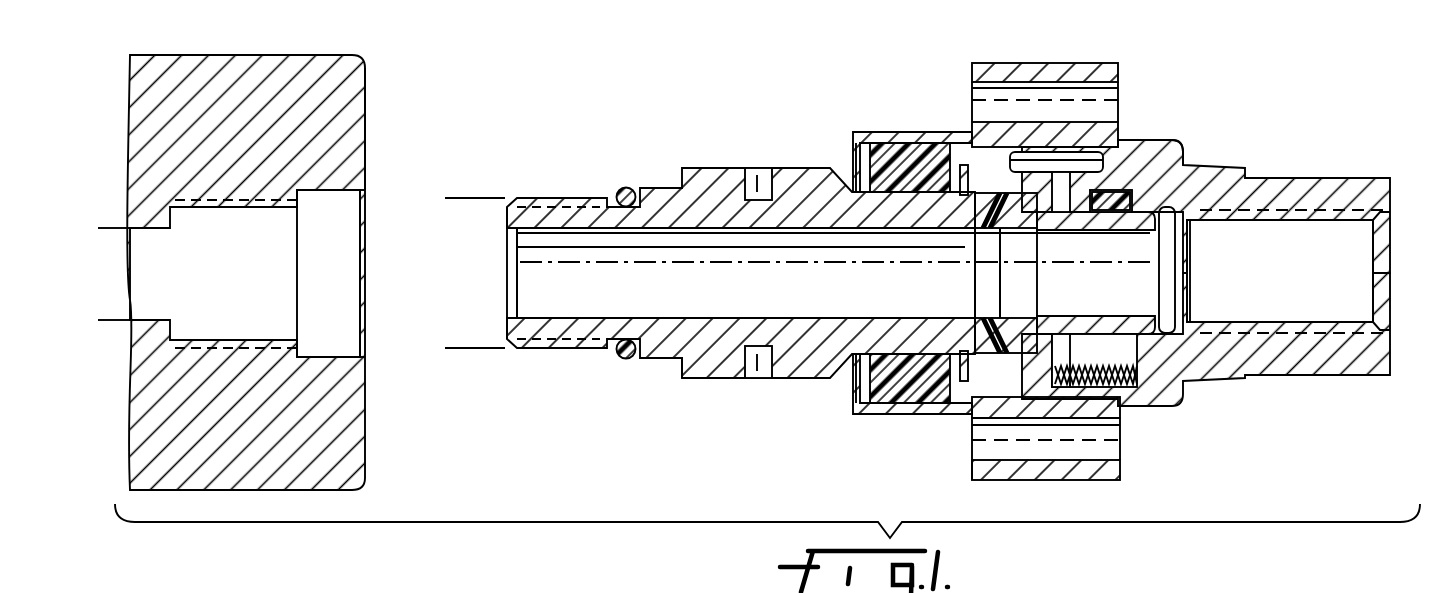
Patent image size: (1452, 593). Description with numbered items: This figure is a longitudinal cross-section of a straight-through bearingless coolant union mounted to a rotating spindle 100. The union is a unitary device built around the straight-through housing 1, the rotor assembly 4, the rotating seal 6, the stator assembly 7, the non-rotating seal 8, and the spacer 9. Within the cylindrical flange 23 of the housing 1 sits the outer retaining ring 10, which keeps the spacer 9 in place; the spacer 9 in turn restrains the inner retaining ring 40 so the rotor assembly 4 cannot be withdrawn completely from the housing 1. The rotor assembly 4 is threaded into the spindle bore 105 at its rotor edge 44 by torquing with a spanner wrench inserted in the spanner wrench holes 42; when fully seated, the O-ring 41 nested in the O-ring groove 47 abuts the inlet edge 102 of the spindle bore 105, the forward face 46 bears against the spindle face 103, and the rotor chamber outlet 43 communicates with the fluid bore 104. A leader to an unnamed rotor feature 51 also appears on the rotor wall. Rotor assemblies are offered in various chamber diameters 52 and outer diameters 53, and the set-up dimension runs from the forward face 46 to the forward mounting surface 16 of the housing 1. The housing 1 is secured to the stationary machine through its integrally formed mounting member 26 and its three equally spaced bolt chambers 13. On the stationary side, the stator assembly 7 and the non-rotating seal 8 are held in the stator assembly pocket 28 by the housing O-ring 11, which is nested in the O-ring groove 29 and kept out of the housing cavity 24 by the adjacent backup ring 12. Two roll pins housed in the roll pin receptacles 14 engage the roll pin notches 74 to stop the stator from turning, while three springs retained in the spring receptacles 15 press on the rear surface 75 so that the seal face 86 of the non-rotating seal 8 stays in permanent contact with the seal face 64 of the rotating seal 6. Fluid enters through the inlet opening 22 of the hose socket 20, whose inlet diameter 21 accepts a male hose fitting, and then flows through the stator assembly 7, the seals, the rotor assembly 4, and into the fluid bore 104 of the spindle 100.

The straight-through housing 1 is at (1342, 378).
The rotor assembly 4 is at (716, 167).
The rotating seal 6 is at (998, 212).
The stator assembly 7 is at (1000, 428).
The non-rotating seal 8 is at (963, 356).
The spacer 9 is at (890, 392).
The outer retaining ring 10 is at (853, 395).
The housing O-ring 11 is at (1185, 157).
The backup ring 12 is at (1147, 148).
The bolt chambers 13 is at (973, 100).
The roll pin receptacles 14 is at (1113, 150).
The spring receptacles 15 is at (1121, 408).
The forward mounting surface 16 is at (972, 476).
The hose socket 20 is at (1306, 288).
The inlet diameter 21 is at (1245, 221).
The inlet opening 22 is at (1386, 236).
The cylindrical flange 23 is at (898, 132).
The housing cavity 24 is at (930, 408).
The mounting member 26 is at (1076, 63).
The stator assembly pocket 28 is at (1165, 326).
The O-ring groove 29 is at (1132, 338).
The inner retaining ring 40 is at (964, 164).
The O-ring 41 is at (622, 358).
The spanner wrench holes 42 is at (759, 168).
The rotor chamber outlet 43 is at (506, 313).
The rotor edge 44 is at (556, 197).
The forward face 46 is at (681, 376).
The O-ring groove 47 is at (612, 196).
The inner bore surface 51 is at (566, 306).
The chamber diameter 52 is at (610, 229).
The outer diameter 53 is at (458, 199).
The seal face 64 is at (1028, 240).
The roll pin notches 74 is at (1053, 172).
The rear surface 75 is at (1000, 340).
The seal face 86 is at (984, 318).
The spindle 100 is at (287, 54).
The inlet edge 102 is at (300, 342).
The spindle face 103 is at (366, 86).
The fluid bore 104 is at (108, 229).
The spindle bore 105 is at (240, 208).